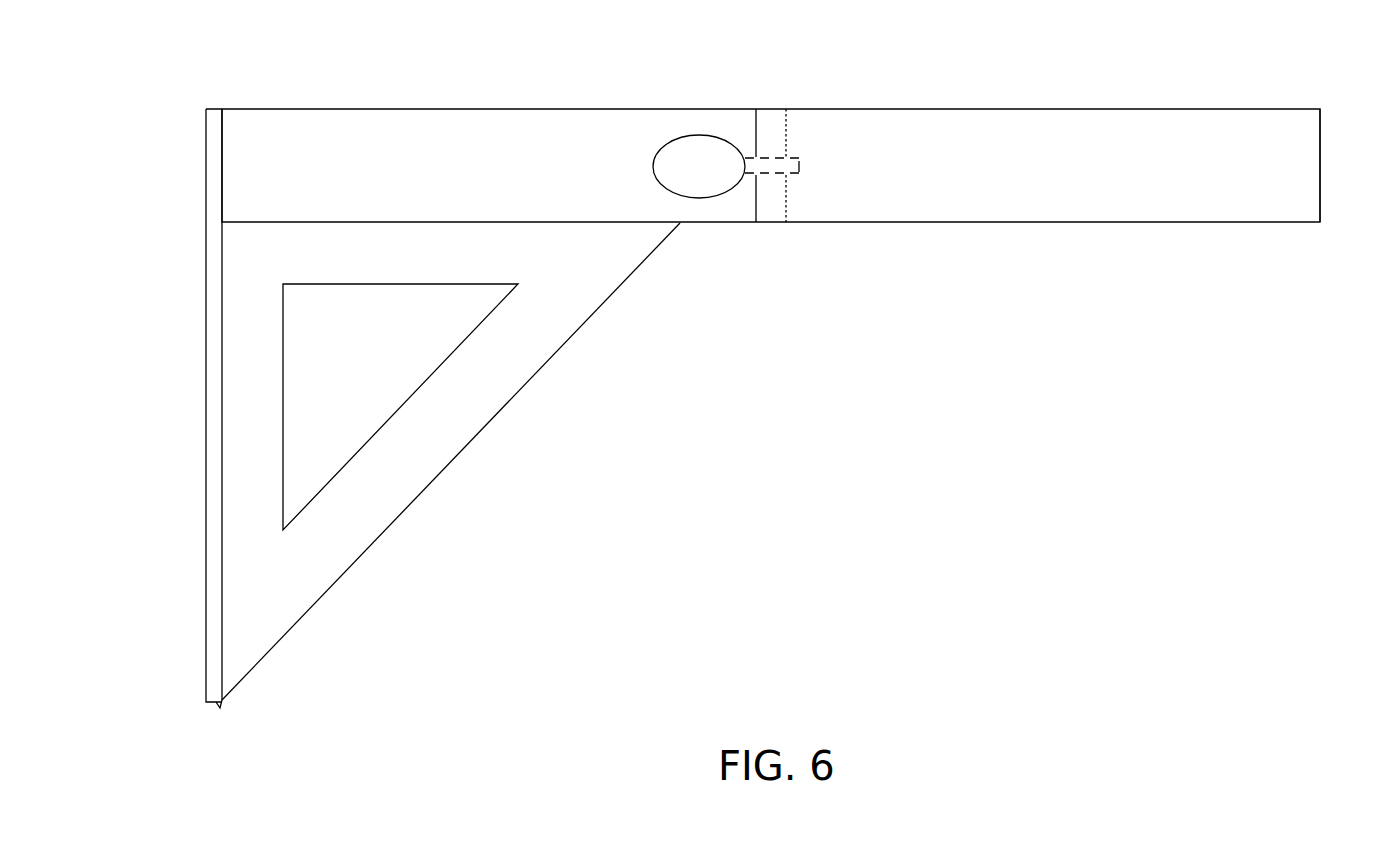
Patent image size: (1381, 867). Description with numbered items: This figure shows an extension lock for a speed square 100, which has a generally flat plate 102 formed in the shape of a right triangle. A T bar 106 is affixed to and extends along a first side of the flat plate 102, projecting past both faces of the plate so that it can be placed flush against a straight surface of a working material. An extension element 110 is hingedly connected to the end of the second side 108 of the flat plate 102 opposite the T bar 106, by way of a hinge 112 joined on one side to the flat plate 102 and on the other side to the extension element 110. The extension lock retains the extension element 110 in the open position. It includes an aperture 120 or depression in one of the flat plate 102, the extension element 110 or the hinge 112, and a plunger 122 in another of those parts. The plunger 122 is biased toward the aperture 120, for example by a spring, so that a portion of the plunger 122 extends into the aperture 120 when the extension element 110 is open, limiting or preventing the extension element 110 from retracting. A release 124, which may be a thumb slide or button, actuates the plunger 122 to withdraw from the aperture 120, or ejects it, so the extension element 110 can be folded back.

The speed square 100 is at (653, 562).
The flat plate 102 is at (539, 353).
The T bar 106 is at (205, 343).
The second side 108 is at (452, 133).
The extension element 110 is at (1223, 113).
The hinge 112 is at (763, 213).
The aperture 120 is at (798, 158).
The plunger 122 is at (770, 158).
The release 124 is at (662, 150).